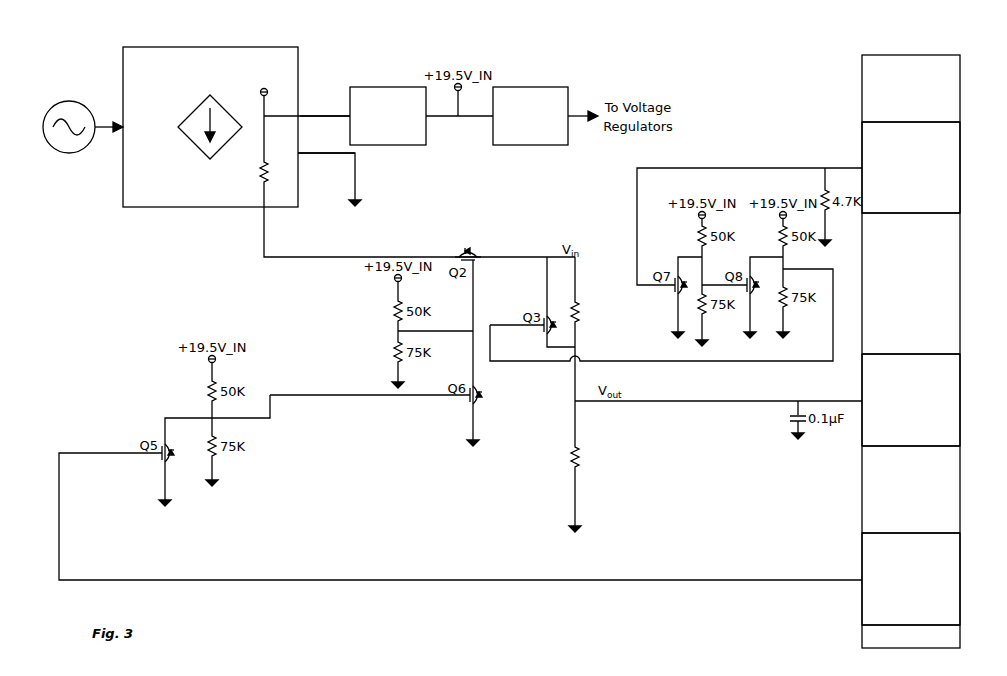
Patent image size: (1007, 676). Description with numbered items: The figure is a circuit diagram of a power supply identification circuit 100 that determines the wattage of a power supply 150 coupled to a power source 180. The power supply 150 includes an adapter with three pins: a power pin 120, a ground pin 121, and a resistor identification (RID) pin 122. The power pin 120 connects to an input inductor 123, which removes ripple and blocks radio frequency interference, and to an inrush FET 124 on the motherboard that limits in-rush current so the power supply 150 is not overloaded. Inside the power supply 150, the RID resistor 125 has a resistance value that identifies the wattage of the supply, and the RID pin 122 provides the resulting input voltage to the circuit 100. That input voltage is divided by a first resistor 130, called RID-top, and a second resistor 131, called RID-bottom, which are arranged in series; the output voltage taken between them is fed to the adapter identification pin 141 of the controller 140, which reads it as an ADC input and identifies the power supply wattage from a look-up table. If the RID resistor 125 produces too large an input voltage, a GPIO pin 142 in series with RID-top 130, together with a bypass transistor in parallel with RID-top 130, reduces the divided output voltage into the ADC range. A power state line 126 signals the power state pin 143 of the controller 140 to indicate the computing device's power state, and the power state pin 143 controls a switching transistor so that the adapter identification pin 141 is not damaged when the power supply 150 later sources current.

The power supply identification circuit 100 is at (759, 50).
The power pin 120 is at (326, 71).
The ground pin 121 is at (326, 110).
The resistor identification (RID) pin 122 is at (369, 232).
The input inductor 123 is at (376, 140).
The inrush field effect transistor (FET) 124 is at (518, 140).
The RID resistor 125 is at (229, 193).
The power state line 126 is at (460, 473).
The first resistor (RID-top) 130 is at (601, 334).
The second resistor (RID-bottom) 131 is at (613, 493).
The controller 140 is at (899, 95).
The adapter identification pin 141 is at (899, 437).
The general-purpose input/output (GPIO) pin 142 is at (899, 186).
The power state pin 143 is at (899, 606).
The power supply 150 is at (198, 90).
The power source 180 is at (83, 203).